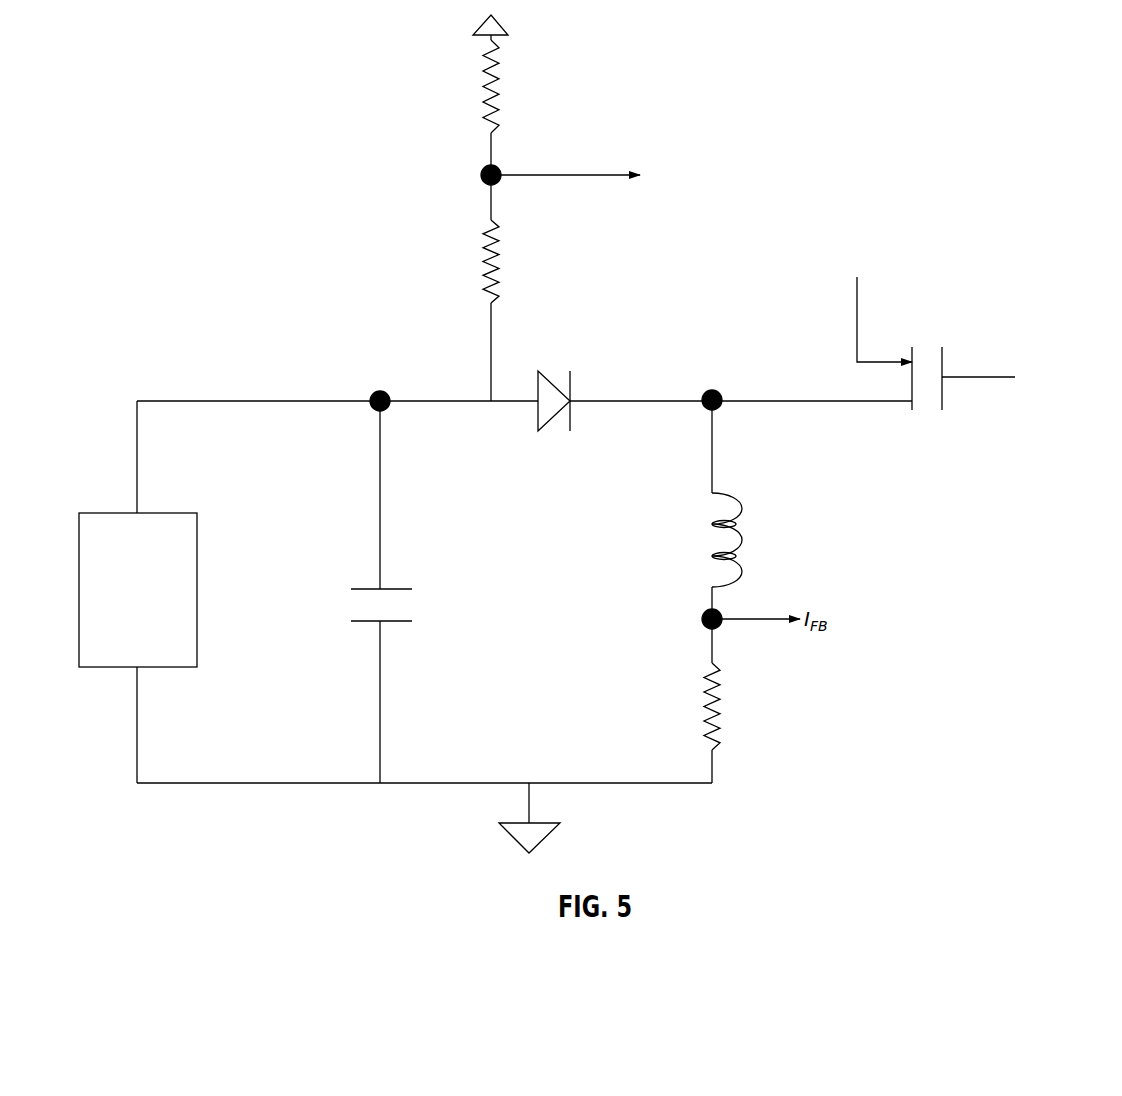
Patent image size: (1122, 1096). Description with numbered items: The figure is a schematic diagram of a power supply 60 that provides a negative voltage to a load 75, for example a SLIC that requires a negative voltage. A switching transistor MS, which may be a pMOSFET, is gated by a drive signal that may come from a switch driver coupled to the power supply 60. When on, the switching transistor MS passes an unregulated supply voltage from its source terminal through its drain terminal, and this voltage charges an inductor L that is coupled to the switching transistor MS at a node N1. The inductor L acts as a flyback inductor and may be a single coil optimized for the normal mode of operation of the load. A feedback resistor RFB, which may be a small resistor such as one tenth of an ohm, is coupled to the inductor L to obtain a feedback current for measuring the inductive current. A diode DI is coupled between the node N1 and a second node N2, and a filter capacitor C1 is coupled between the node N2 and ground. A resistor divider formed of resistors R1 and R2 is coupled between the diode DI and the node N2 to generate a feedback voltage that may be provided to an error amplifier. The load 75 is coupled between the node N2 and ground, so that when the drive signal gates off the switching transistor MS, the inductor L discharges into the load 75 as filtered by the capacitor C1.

The power supply 60 is at (452, 308).
The load 75 is at (101, 512).
The resistor R1 is at (505, 261).
The resistor R2 is at (505, 86).
The diode DI is at (554, 383).
The node N1 is at (715, 383).
The second node N2 is at (381, 386).
The switching transistor MS is at (960, 335).
The filter capacitor C1 is at (398, 605).
The inductor L is at (736, 540).
The feedback resistor RFB is at (731, 706).